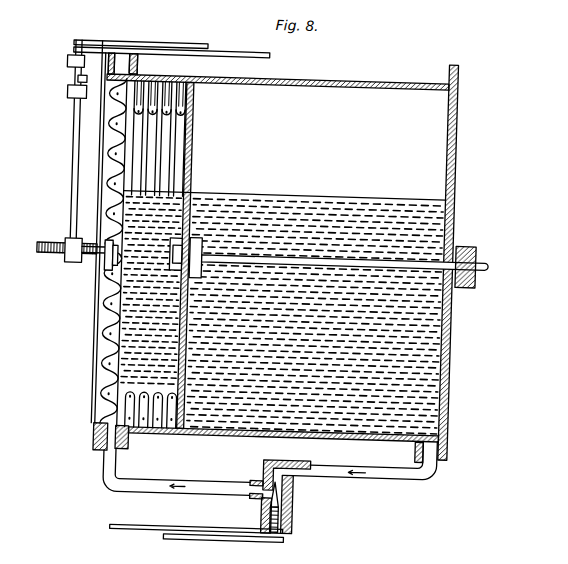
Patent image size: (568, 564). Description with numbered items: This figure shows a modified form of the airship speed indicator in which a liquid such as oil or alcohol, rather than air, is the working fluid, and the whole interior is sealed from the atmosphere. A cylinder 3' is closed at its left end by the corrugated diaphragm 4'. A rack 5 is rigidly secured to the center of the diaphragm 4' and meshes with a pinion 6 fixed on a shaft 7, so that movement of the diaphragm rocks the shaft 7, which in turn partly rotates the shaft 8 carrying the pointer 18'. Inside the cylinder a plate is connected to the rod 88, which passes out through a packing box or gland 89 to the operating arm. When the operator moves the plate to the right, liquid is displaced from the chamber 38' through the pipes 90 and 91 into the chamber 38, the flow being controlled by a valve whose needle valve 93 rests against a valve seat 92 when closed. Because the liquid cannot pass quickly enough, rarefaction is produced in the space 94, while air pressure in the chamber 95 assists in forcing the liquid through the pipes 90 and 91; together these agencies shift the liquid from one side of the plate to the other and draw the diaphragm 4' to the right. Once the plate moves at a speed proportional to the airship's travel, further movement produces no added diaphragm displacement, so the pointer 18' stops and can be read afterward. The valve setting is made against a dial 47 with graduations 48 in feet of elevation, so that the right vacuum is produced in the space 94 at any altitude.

The cylinder 3' is at (278, 66).
The diaphragm 4' is at (70, 231).
The rack 5 is at (53, 253).
The pinion 6 is at (73, 261).
The shaft 7 is at (75, 214).
The shaft 8 is at (72, 74).
The pointer 18' is at (172, 37).
The chamber 38 is at (93, 253).
The chamber 38' is at (303, 252).
The dial 47 is at (144, 529).
The graduations 48 is at (192, 528).
The rod 88 is at (345, 251).
The packing box or gland 89 is at (469, 238).
The pipe 90 is at (417, 471).
The pipe 91 is at (137, 486).
The valve seat 92 is at (307, 484).
The needle valve 93 is at (302, 495).
The space or chamber 94 is at (131, 137).
The chamber 95 is at (441, 103).